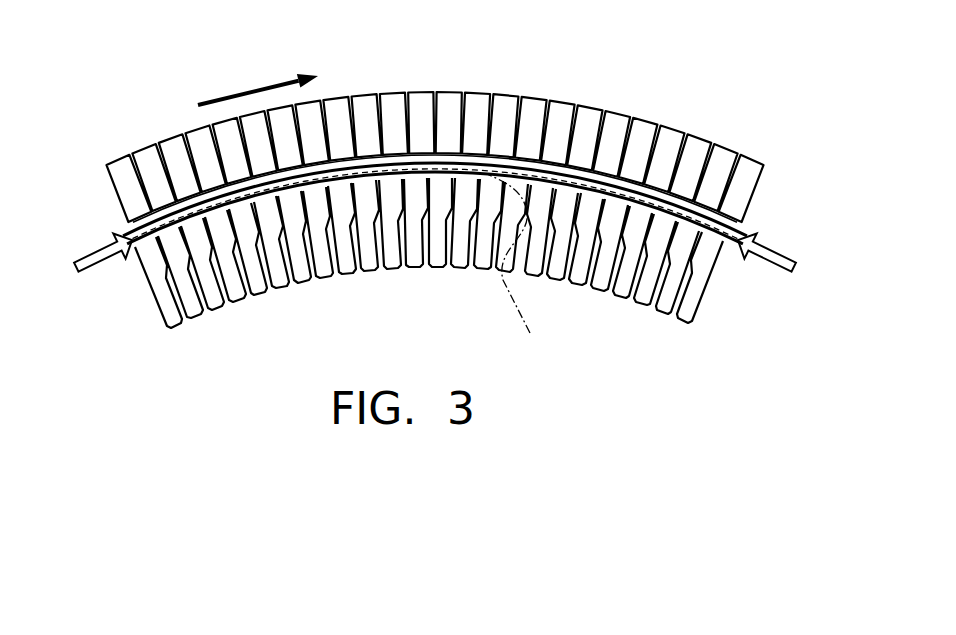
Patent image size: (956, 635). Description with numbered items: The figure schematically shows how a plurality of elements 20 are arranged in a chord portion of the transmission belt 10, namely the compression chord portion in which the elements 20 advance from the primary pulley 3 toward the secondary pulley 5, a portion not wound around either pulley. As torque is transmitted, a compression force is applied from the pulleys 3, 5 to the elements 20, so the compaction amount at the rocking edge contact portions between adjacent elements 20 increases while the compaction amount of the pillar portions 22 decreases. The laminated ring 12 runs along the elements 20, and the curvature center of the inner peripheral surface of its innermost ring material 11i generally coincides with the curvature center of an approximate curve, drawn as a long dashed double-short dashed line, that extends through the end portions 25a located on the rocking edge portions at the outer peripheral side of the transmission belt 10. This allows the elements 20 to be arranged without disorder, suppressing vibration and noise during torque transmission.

The transmission belt 10 is at (437, 87).
The laminated ring 12 is at (534, 172).
The element 20 is at (732, 146).
The pillar portion 22 is at (173, 167).
The innermost ring material 11i is at (372, 172).
The end portion 25a is at (435, 260).
The primary pulley 3 is at (67, 352).
The secondary pulley 5 is at (819, 352).